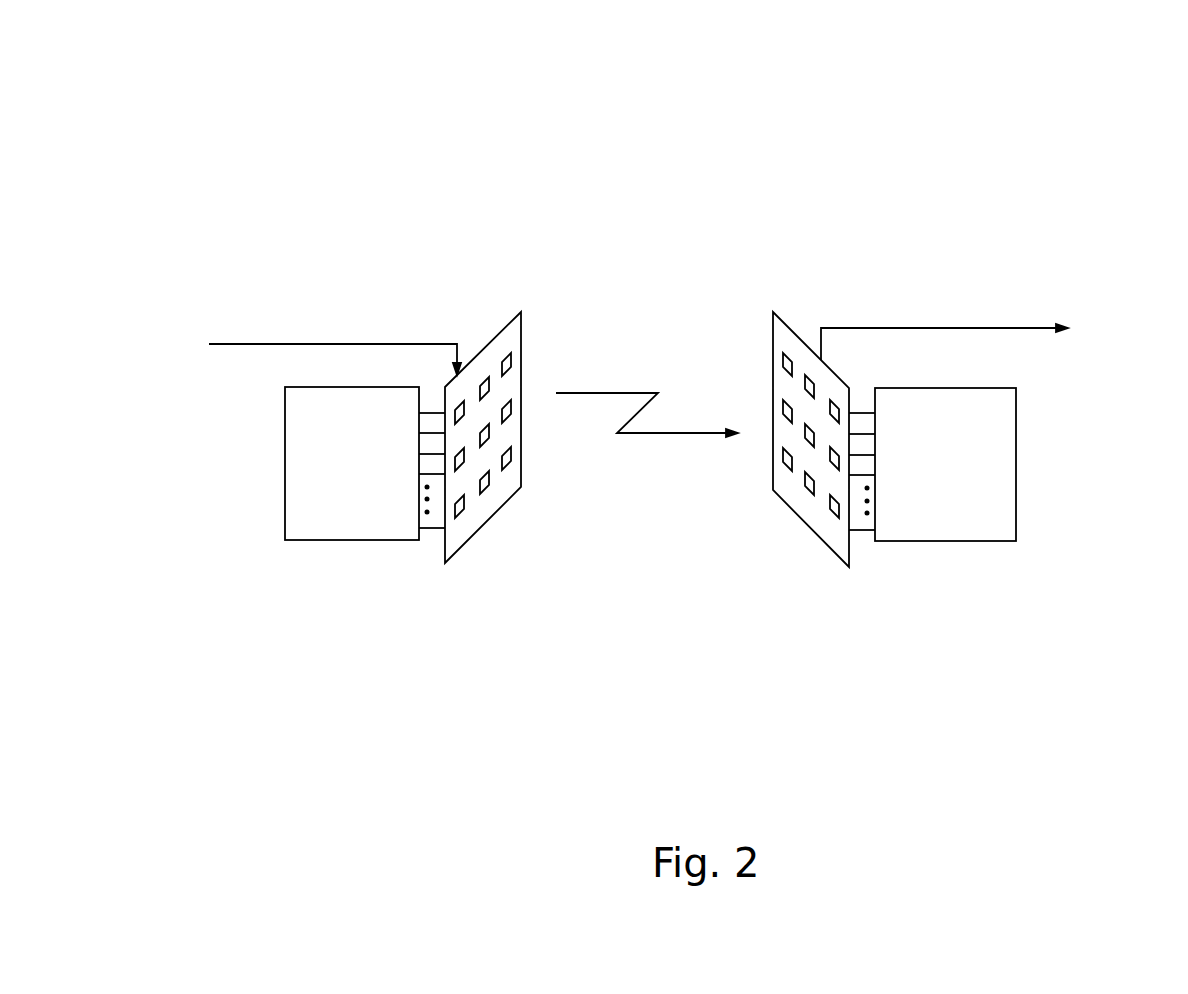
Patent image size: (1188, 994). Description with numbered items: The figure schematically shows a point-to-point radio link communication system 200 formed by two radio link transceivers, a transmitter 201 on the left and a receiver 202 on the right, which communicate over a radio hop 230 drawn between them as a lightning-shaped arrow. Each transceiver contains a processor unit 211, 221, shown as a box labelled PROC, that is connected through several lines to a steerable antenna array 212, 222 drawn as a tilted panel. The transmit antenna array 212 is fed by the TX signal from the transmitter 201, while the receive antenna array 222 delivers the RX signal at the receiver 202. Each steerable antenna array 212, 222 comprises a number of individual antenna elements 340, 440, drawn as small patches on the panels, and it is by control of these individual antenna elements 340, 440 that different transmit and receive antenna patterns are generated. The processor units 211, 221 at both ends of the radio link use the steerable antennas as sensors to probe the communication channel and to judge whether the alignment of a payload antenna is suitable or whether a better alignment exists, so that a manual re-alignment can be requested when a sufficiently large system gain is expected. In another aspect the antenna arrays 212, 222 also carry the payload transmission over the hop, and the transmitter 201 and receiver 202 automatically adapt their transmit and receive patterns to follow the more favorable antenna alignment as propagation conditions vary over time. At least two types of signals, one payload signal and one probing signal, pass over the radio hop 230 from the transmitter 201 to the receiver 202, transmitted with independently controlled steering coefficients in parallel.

The point-to-point radio link communication system 200 is at (1115, 132).
The transmitter 201 is at (571, 631).
The receiver 202 is at (810, 661).
The processor unit 211 is at (348, 570).
The steerable transmit pattern antenna array 212 is at (495, 288).
The processor unit 221 is at (948, 578).
The steerable receive pattern antenna array 222 is at (797, 305).
The radio hop 230 is at (619, 368).
The antenna element 340 is at (494, 491).
The antenna element 440 is at (788, 492).